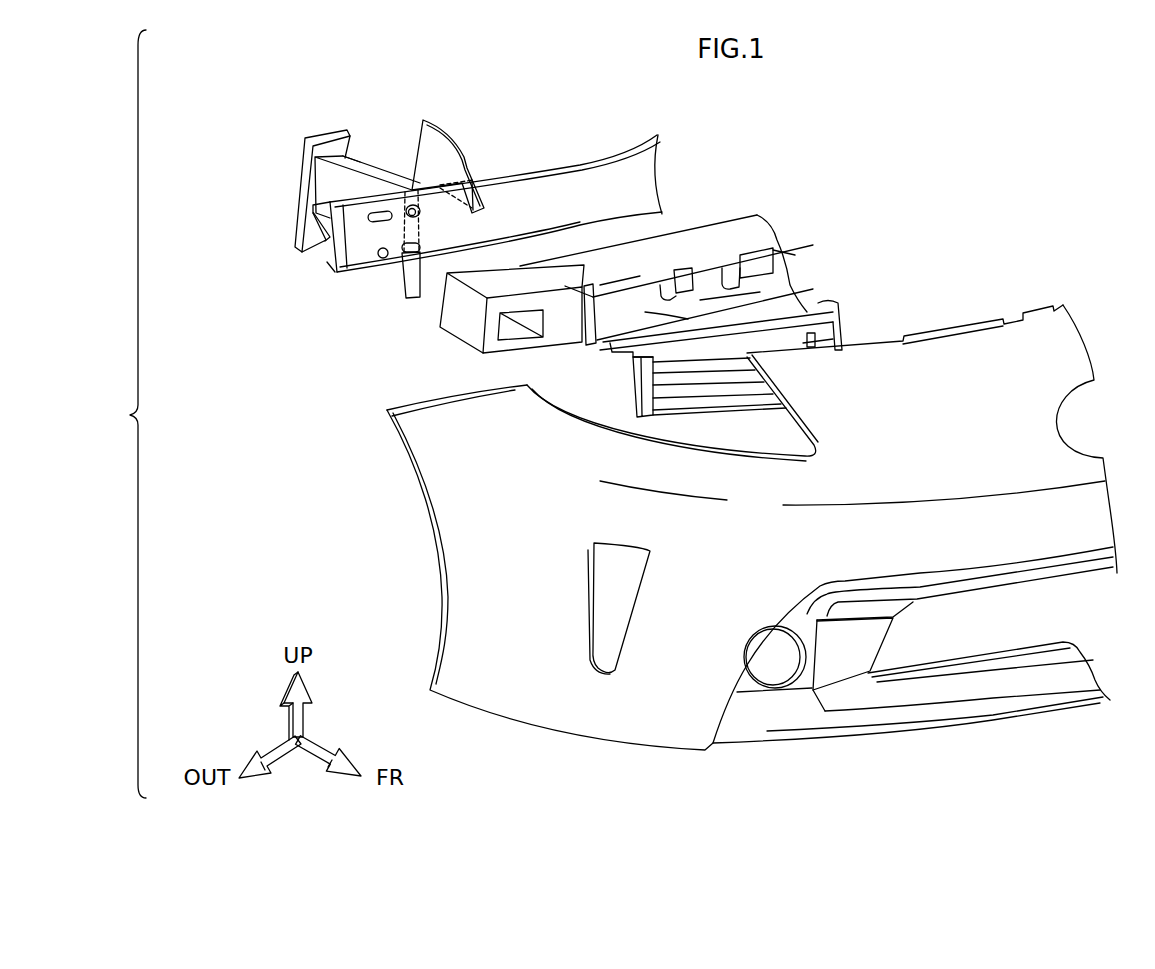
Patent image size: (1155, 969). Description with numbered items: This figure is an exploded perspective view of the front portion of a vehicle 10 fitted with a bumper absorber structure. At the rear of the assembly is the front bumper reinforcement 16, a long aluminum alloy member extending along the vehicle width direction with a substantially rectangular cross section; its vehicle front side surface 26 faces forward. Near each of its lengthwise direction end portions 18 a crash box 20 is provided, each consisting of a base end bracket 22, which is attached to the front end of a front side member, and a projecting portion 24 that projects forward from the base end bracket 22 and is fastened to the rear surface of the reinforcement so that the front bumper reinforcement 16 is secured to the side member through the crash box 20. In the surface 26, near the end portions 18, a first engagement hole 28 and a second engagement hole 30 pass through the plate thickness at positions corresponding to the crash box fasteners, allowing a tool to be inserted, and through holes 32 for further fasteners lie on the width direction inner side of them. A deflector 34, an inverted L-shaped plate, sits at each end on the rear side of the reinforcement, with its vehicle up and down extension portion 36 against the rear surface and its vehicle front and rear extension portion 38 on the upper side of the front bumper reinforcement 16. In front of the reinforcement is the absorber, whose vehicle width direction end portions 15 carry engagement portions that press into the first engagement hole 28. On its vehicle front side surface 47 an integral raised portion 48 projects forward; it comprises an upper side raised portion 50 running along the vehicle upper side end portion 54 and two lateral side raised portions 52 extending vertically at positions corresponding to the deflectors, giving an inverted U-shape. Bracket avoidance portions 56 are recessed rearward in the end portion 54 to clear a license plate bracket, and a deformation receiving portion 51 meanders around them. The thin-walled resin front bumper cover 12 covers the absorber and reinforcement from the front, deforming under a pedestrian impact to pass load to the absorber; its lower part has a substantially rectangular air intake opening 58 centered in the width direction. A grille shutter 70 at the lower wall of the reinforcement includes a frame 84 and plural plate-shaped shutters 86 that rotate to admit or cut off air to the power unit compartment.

The vehicle 10 is at (912, 195).
The front bumper cover 12 is at (1074, 348).
The vehicle width direction end portions 15 is at (545, 345).
The front bumper reinforcement 16 is at (650, 168).
The lengthwise direction end portions 18 is at (345, 268).
The crash box 20 is at (358, 158).
The base end bracket 22 is at (328, 135).
The projecting portion 24 is at (374, 181).
The vehicle front side surface 26 is at (527, 206).
The first engagement hole 28 is at (375, 226).
The second engagement hole 30 is at (386, 260).
The through holes 32 is at (418, 245).
The deflector 34 is at (442, 124).
The vehicle up and down extension portion 36 is at (406, 297).
The vehicle front and rear extension portion 38 is at (463, 143).
The vehicle front side surface 47 is at (713, 304).
The raised portion 48 is at (629, 278).
The upper side raised portion 50 is at (676, 270).
The deformation receiving portion 51 is at (783, 273).
The lateral side raised portions 52 is at (603, 330).
The vehicle upper side end portion 54 is at (570, 285).
The bracket avoidance portions 56 is at (745, 255).
The air intake opening 58 is at (984, 616).
The grille shutter 70 is at (853, 302).
The frame 84 is at (826, 308).
The shutters 86 is at (637, 380).